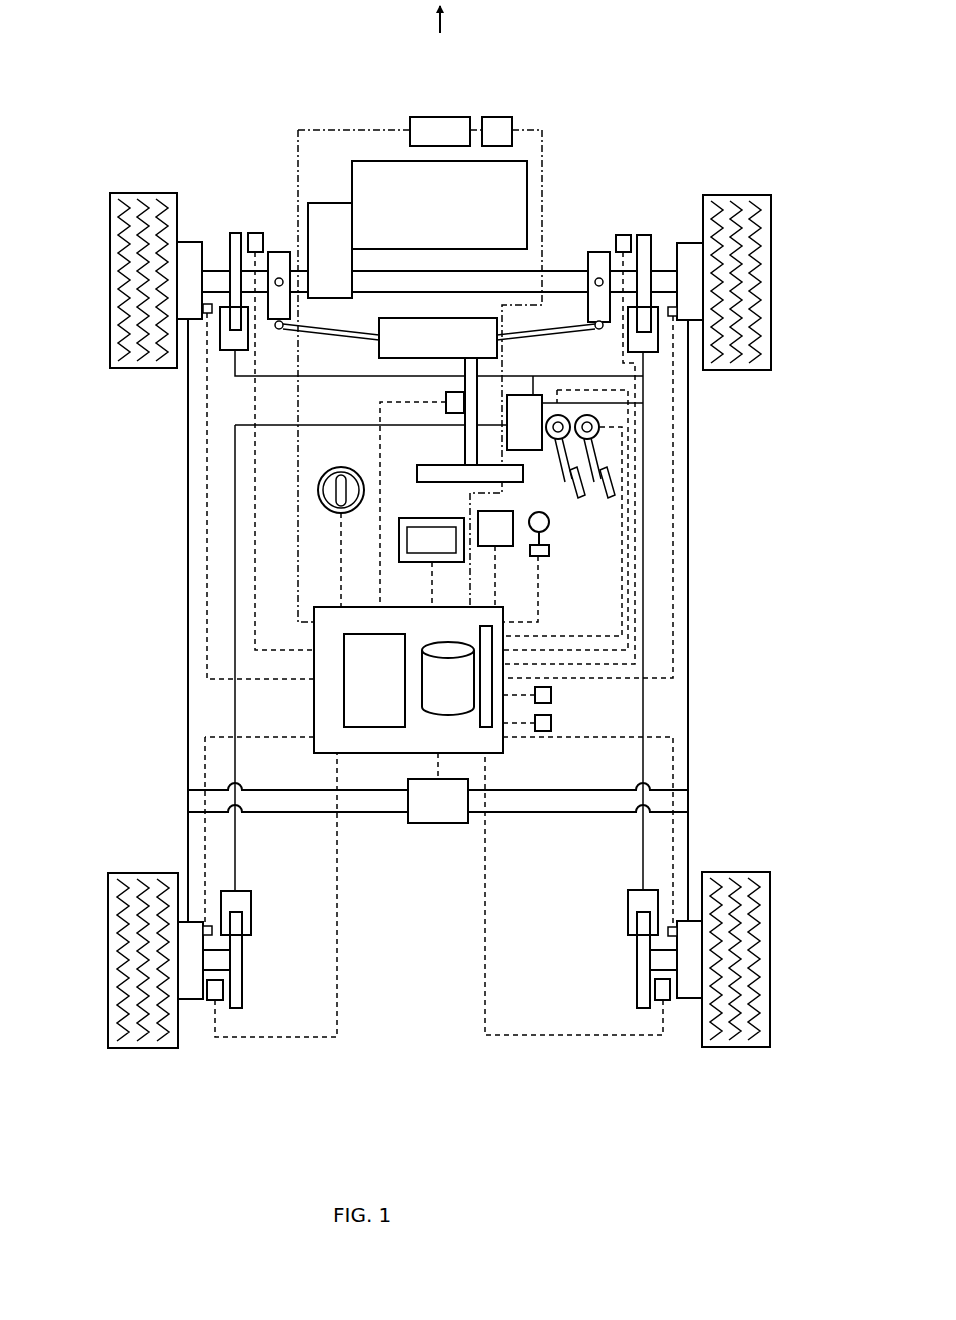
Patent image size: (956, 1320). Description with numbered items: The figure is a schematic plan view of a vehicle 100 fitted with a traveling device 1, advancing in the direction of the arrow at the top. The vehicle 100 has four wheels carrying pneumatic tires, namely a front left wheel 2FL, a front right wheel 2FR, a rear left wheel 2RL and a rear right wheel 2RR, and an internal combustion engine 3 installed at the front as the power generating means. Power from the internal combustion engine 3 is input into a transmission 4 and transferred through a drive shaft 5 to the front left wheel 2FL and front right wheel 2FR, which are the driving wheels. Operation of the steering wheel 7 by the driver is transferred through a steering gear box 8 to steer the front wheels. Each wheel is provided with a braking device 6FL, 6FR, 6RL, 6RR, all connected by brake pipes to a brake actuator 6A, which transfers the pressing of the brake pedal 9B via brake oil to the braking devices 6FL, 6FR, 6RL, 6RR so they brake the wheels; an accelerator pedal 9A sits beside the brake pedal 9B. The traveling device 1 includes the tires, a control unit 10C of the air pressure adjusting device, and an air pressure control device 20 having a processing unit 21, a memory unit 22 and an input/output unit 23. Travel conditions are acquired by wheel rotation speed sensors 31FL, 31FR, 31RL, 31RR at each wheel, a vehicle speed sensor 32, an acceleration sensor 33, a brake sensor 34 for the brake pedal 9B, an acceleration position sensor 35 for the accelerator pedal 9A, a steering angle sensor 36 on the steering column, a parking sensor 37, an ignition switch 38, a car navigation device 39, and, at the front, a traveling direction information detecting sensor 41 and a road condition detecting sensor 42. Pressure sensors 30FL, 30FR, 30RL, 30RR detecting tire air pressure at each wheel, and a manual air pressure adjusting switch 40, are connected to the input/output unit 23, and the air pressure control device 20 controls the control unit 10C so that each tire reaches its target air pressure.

The vehicle 100 is at (126, 56).
The traveling device 1 is at (405, 930).
The front left wheel 2FL is at (135, 200).
The front right wheel 2FR is at (743, 202).
The rear left wheel 2RL is at (153, 1042).
The rear right wheel 2RR is at (727, 1040).
The internal combustion engine 3 is at (375, 170).
The transmission 4 is at (328, 215).
The drive shaft 5 is at (565, 282).
The braking device 6FL is at (225, 212).
The braking device 6FR is at (655, 212).
The braking device 6RL is at (262, 890).
The braking device 6RR is at (614, 890).
The brake actuator 6A is at (525, 405).
The steering wheel 7 is at (443, 476).
The steering gear box 8 is at (405, 335).
The accelerator pedal 9A is at (611, 498).
The brake pedal 9B is at (581, 498).
The control unit 10C is at (427, 812).
The air pressure control device 20 is at (394, 755).
The processing unit 21 is at (381, 712).
The memory unit 22 is at (458, 697).
The input/output unit 23 is at (488, 718).
The pressure sensor 30FL is at (207, 316).
The pressure sensor 30FR is at (673, 318).
The pressure sensor 30RL is at (205, 926).
The pressure sensor 30RR is at (677, 927).
The wheel rotation speed sensor 31FL is at (256, 230).
The wheel rotation speed sensor 31FR is at (623, 233).
The wheel rotation speed sensor 31RL is at (213, 1003).
The wheel rotation speed sensor 31RR is at (666, 1003).
The vehicle speed sensor 32 is at (552, 695).
The acceleration sensor 33 is at (552, 723).
The brake sensor 34 is at (578, 412).
The acceleration position sensor 35 is at (600, 441).
The steering angle sensor 36 is at (446, 401).
The parking sensor 37 is at (506, 548).
The ignition switch 38 is at (550, 553).
The car navigation device 39 is at (410, 516).
The air pressure adjusting switch 40 is at (335, 468).
The traveling direction information detecting sensor 41 is at (445, 125).
The road condition detecting sensor 42 is at (497, 125).